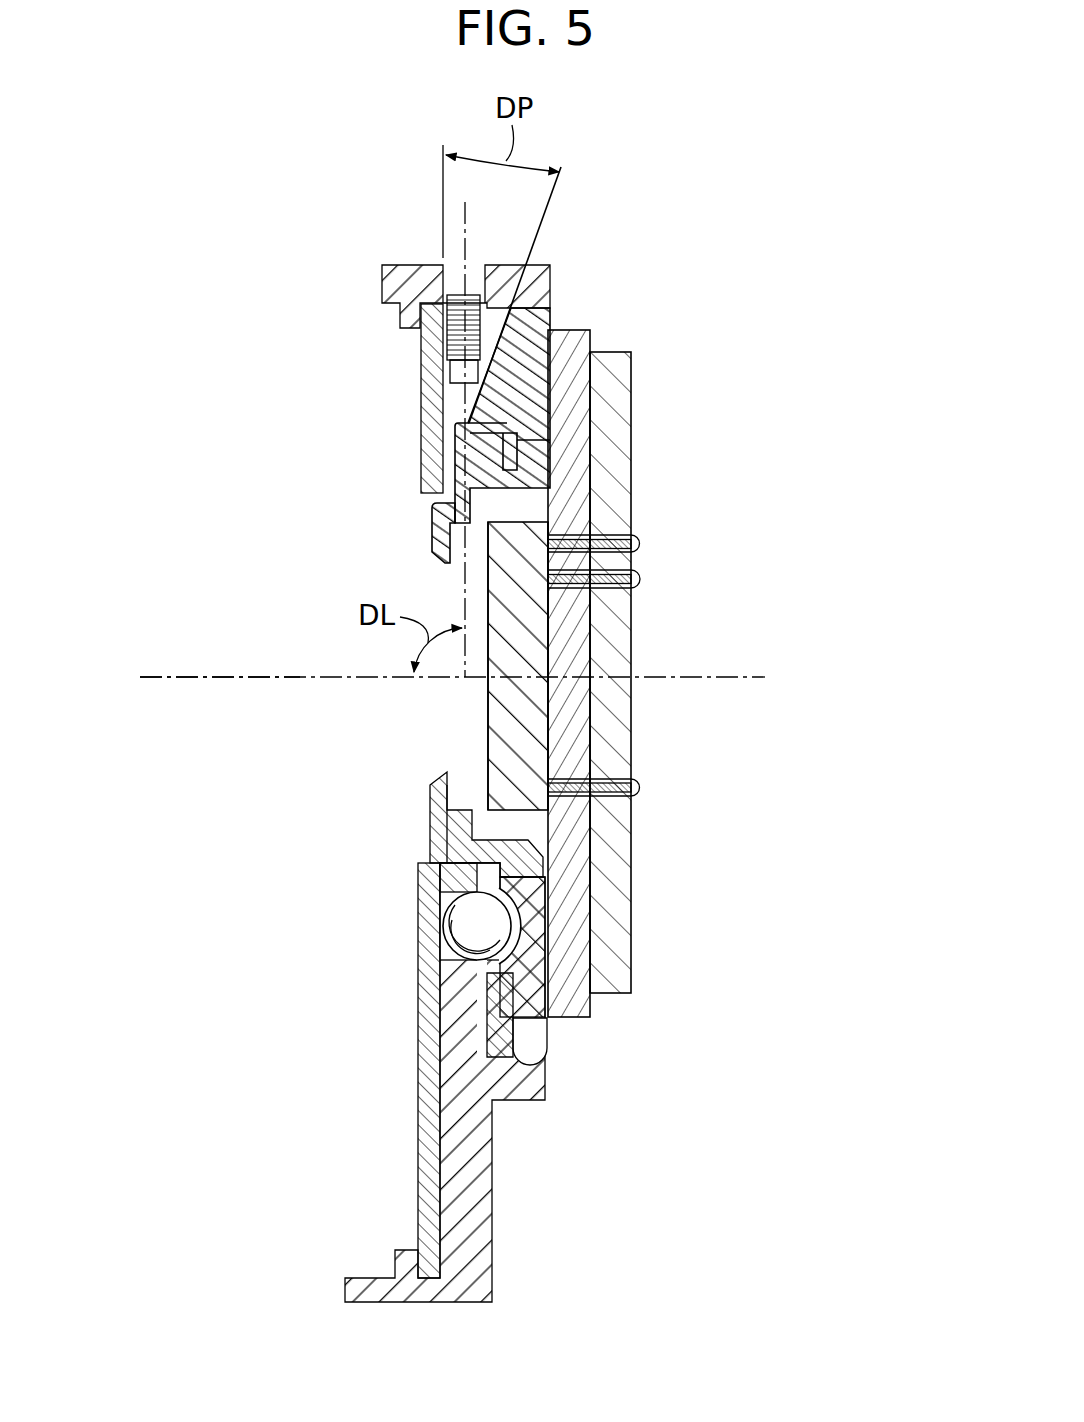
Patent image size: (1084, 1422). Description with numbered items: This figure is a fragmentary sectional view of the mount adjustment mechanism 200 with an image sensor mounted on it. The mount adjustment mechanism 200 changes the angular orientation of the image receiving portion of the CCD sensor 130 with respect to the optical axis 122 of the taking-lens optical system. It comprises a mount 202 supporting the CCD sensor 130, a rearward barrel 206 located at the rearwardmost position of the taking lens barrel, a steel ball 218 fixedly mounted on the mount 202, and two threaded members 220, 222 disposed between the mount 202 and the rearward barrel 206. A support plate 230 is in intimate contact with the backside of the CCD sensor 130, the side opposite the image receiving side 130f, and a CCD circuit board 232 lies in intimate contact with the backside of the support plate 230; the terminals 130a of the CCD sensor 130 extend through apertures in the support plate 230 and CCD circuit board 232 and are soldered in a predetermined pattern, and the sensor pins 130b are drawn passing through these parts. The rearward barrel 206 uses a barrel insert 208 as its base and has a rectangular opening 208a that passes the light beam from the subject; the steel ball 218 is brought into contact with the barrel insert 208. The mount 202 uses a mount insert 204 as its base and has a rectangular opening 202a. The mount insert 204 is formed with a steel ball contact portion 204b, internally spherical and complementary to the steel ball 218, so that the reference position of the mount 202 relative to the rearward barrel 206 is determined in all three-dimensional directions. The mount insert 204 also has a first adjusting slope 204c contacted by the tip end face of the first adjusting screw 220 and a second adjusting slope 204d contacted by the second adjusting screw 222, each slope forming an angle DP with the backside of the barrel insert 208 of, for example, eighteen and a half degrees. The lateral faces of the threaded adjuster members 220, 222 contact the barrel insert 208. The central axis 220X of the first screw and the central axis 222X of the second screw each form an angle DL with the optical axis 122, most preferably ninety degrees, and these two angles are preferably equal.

The mount adjustment mechanism 200 is at (634, 186).
The rearward barrel 206 is at (383, 290).
The barrel insert 208 is at (430, 410).
The rectangular opening 208a is at (421, 846).
The central axis 220X is at (456, 229).
The central axis 222X is at (332, 203).
The first adjusting screw 220 is at (457, 338).
The second adjusting screw 222 is at (353, 339).
The mount 202 is at (527, 325).
The rectangular opening 202a is at (430, 562).
The support plate 230 is at (565, 400).
The first adjusting slope 204c is at (497, 373).
The second adjusting slope 204d is at (681, 355).
The mount insert 204 is at (593, 445).
The steel ball contact portion 204b is at (522, 922).
The steel ball 218 is at (482, 930).
The CCD sensor 130 is at (510, 707).
The image receiving side 130f is at (486, 742).
The terminals 130a is at (567, 540).
The lens pins 130b is at (650, 548).
The CCD circuit board 232 is at (608, 635).
The optical axis 122 is at (208, 670).